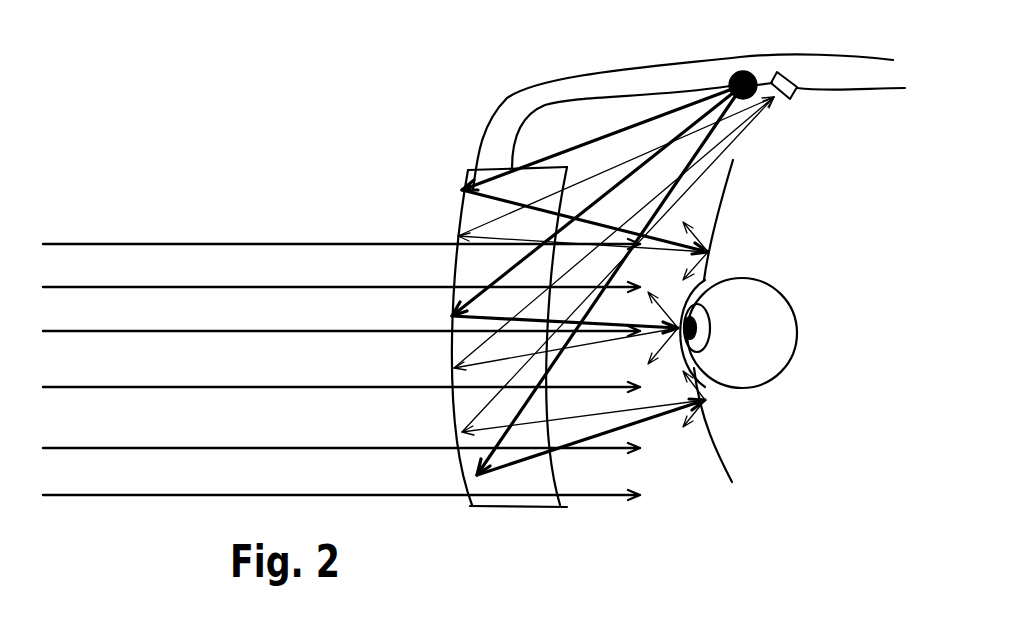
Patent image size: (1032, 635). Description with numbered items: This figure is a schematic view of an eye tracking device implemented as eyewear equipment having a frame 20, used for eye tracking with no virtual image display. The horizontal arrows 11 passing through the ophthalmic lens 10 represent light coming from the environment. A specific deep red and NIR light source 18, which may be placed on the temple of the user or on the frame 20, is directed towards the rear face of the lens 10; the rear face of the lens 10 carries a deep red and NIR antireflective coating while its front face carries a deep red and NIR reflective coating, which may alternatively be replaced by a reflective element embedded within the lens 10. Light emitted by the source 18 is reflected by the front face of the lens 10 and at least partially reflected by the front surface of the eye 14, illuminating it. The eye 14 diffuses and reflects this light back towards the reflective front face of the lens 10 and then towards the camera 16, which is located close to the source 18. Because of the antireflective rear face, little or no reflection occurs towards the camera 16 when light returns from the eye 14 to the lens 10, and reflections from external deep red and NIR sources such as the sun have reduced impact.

The ophthalmic lens 10 is at (455, 218).
The horizontal arrows 11 is at (166, 242).
The eye 14 is at (753, 277).
The camera 16 is at (787, 100).
The deep red and NIR light source 18 is at (742, 69).
The frame 20 is at (643, 80).